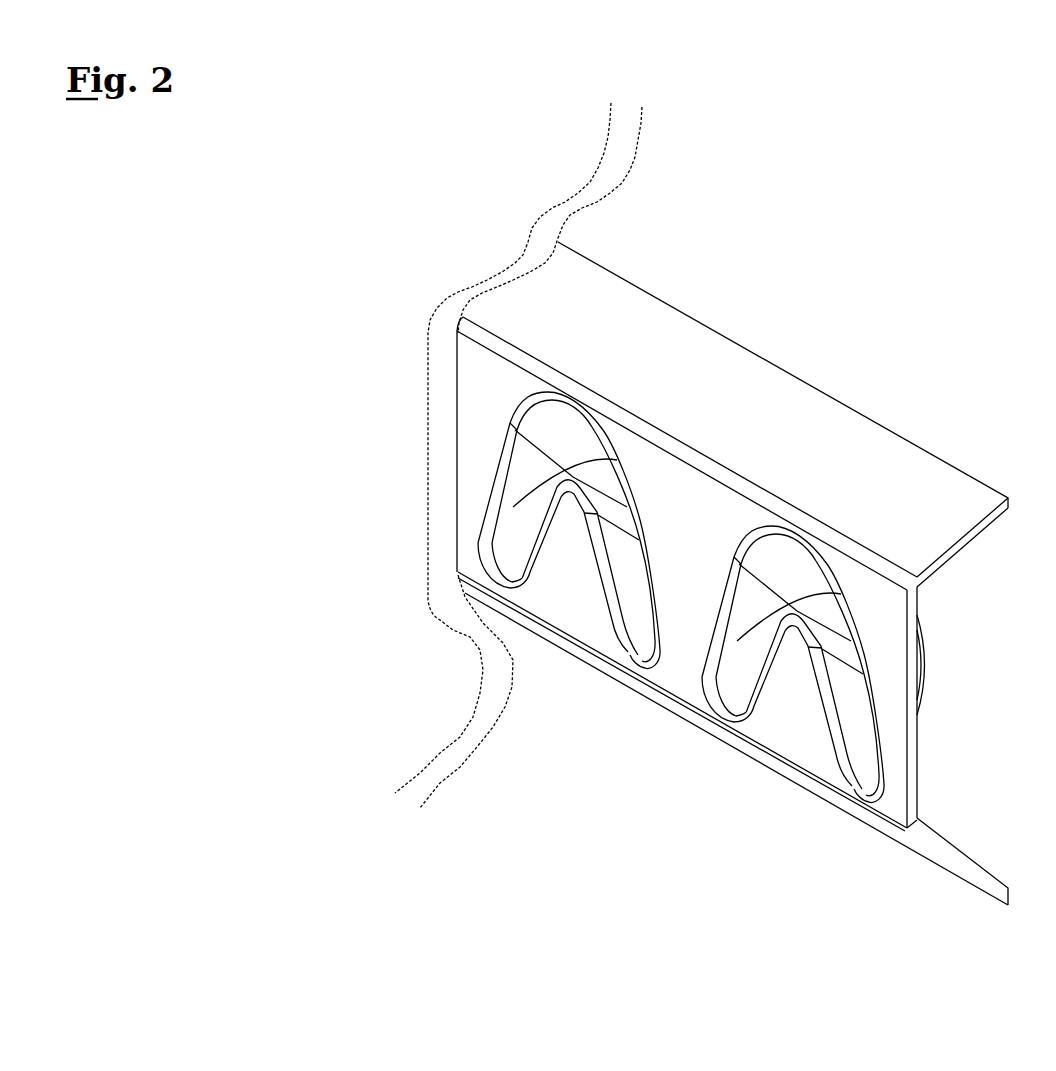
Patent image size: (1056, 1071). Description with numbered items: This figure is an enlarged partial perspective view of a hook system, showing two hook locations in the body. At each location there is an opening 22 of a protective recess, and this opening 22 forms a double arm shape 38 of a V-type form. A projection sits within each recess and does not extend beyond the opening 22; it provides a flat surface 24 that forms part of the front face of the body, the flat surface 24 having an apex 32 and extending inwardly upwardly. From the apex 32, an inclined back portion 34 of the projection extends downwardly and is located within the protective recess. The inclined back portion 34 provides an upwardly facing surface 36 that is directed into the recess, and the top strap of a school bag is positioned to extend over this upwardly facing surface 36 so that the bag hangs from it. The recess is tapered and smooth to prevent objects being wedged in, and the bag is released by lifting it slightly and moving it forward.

The opening 22 is at (722, 629).
The flat surface 24 is at (788, 692).
The apex 32 is at (727, 652).
The inclined back portion 34 is at (877, 740).
The upwardly facing surface 36 is at (872, 718).
The double arm shape 38 is at (552, 461).